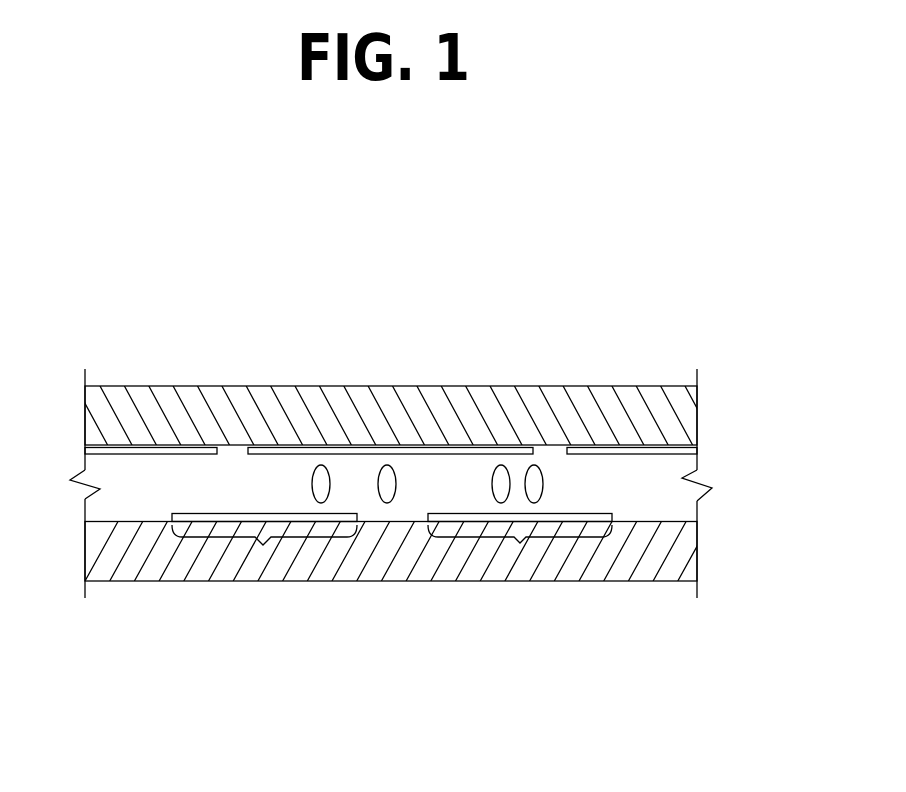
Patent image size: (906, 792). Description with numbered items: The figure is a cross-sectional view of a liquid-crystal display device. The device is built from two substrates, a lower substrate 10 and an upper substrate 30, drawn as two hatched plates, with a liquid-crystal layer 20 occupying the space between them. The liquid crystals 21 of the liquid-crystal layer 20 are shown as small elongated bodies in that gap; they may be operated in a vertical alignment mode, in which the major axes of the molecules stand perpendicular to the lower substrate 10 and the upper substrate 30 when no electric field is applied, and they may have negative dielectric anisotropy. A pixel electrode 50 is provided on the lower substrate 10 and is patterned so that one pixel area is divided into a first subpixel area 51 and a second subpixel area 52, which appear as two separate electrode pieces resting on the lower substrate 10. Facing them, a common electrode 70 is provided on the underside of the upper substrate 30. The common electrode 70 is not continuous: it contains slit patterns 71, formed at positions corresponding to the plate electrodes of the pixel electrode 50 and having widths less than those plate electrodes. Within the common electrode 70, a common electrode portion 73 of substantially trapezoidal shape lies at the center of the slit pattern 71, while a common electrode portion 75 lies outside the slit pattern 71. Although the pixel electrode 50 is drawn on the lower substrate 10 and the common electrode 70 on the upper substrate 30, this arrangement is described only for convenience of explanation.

The lower substrate 10 is at (686, 560).
The liquid-crystal layer 20 is at (684, 500).
The liquid crystals 21 is at (321, 496).
The upper substrate 30 is at (692, 418).
The pixel electrode 50 is at (392, 592).
The first subpixel area 51 is at (264, 570).
The second subpixel area 52 is at (520, 575).
The common electrode 70 is at (391, 379).
The slit pattern 71 is at (388, 395).
The common electrode portion 73 is at (356, 452).
The common electrode portion 75 is at (153, 452).